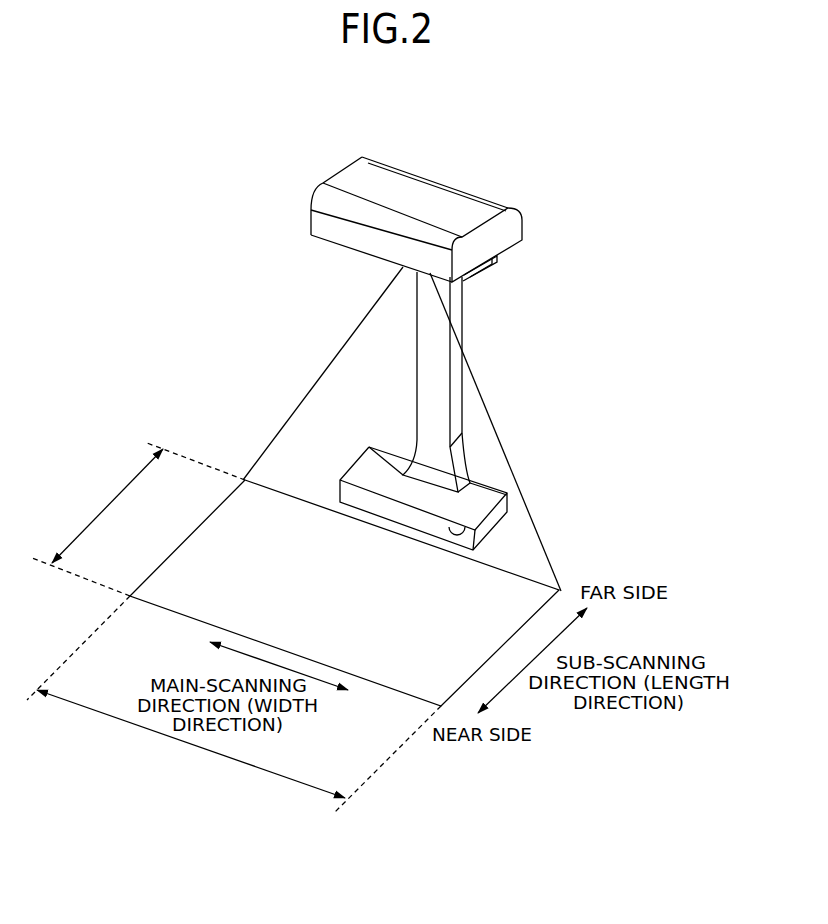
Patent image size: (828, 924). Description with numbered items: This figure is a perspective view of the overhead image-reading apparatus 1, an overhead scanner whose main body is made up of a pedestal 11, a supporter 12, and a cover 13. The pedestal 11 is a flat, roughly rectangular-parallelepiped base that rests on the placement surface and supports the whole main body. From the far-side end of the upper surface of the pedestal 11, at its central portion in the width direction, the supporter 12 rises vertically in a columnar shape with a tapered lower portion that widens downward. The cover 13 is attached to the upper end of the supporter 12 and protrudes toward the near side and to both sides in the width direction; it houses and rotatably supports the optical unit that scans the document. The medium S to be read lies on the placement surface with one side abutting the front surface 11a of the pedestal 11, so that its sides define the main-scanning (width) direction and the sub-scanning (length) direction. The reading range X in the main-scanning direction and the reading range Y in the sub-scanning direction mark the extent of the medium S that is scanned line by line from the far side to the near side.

The overhead image-reading apparatus 1 is at (345, 136).
The pedestal 11 is at (490, 485).
The front surface 11a is at (477, 525).
The supporter 12 is at (463, 313).
The cover 13 is at (466, 192).
The medium to be read S is at (190, 537).
The reading range in the main-scanning direction X is at (177, 743).
The reading range in the sub-scanning direction Y is at (108, 498).